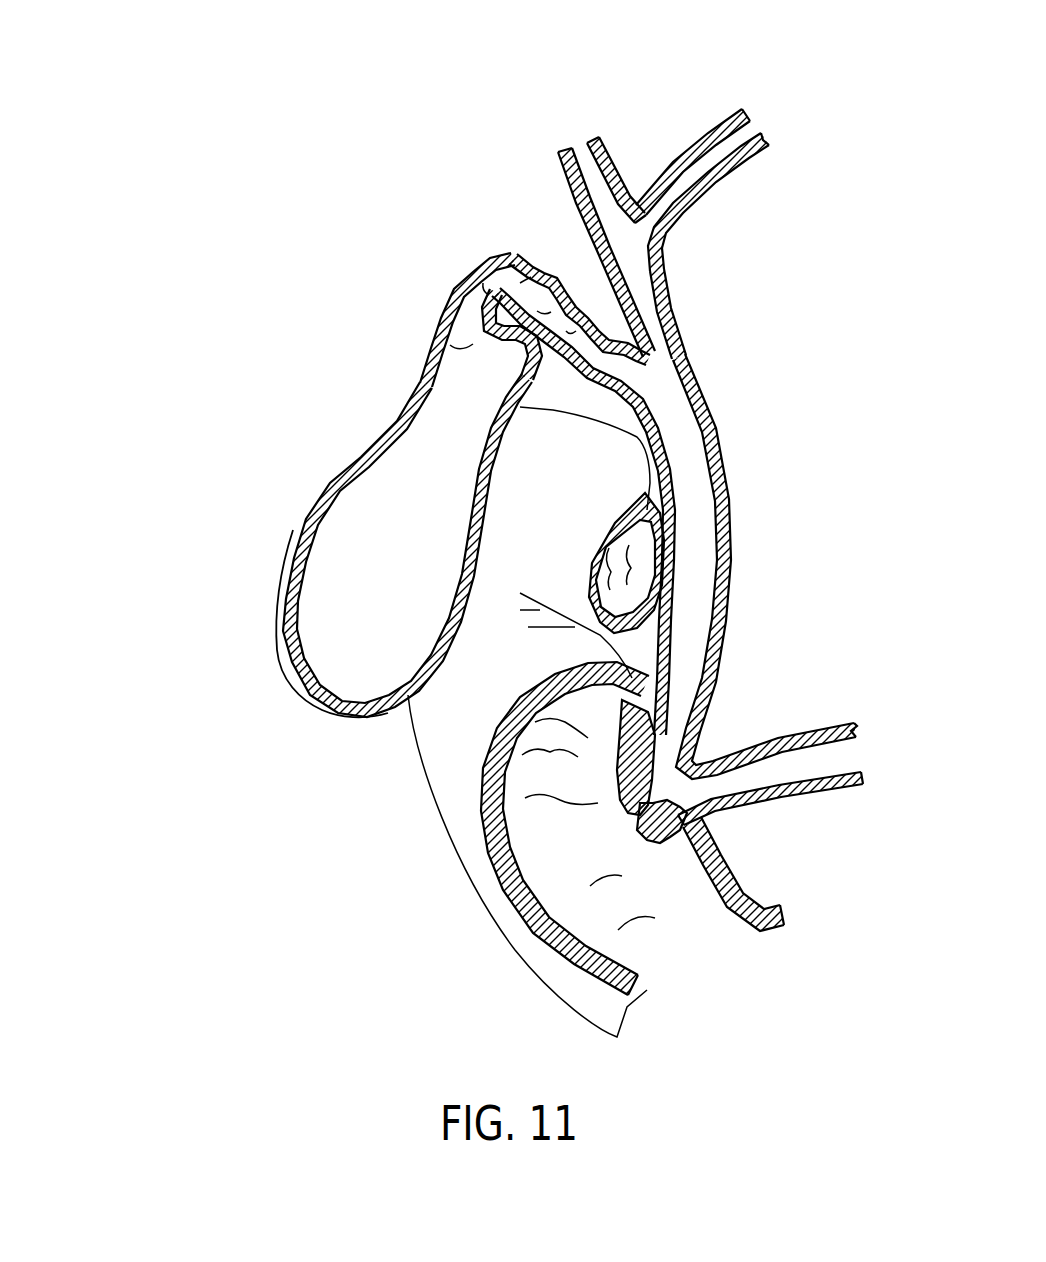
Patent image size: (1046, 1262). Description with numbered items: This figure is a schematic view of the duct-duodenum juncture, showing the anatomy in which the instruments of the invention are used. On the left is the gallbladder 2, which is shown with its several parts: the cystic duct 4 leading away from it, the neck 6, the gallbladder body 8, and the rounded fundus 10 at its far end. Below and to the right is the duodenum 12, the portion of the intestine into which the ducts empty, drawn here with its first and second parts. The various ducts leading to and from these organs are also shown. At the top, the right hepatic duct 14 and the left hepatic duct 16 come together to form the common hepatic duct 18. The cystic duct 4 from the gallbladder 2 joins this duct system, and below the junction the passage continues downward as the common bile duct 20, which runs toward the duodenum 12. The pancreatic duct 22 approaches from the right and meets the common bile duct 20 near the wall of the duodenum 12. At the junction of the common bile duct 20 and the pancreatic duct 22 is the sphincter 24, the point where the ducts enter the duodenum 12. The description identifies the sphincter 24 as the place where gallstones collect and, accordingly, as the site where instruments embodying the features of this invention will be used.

The gallbladder 2 is at (291, 520).
The cystic duct 4 is at (465, 302).
The neck 6 is at (427, 353).
The gallbladder body 8 is at (333, 483).
The fundus 10 is at (311, 659).
The duodenum 12 is at (506, 722).
The right hepatic duct 14 is at (590, 168).
The left hepatic duct 16 is at (715, 153).
The common hepatic duct 18 is at (643, 278).
The common bile duct 20 is at (683, 467).
The pancreatic duct 22 is at (780, 757).
The sphincter 24 is at (632, 820).